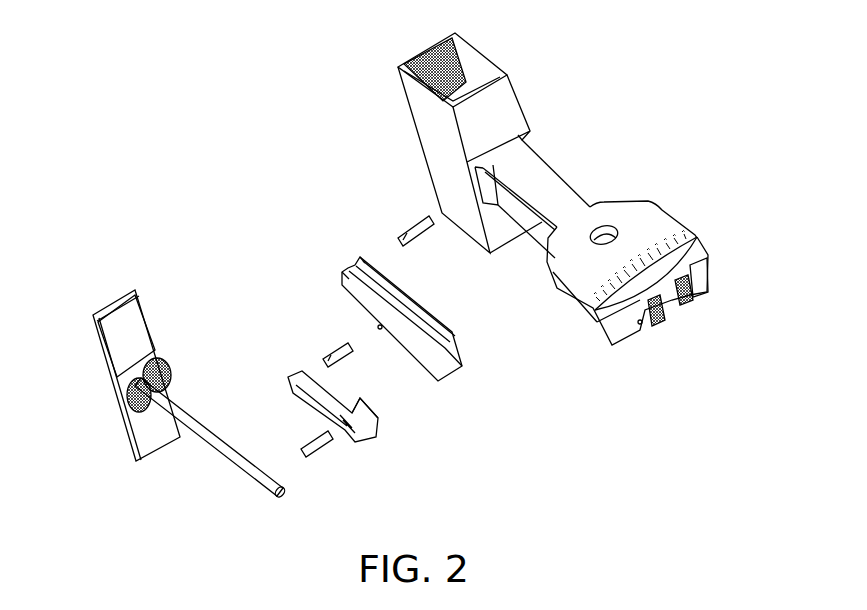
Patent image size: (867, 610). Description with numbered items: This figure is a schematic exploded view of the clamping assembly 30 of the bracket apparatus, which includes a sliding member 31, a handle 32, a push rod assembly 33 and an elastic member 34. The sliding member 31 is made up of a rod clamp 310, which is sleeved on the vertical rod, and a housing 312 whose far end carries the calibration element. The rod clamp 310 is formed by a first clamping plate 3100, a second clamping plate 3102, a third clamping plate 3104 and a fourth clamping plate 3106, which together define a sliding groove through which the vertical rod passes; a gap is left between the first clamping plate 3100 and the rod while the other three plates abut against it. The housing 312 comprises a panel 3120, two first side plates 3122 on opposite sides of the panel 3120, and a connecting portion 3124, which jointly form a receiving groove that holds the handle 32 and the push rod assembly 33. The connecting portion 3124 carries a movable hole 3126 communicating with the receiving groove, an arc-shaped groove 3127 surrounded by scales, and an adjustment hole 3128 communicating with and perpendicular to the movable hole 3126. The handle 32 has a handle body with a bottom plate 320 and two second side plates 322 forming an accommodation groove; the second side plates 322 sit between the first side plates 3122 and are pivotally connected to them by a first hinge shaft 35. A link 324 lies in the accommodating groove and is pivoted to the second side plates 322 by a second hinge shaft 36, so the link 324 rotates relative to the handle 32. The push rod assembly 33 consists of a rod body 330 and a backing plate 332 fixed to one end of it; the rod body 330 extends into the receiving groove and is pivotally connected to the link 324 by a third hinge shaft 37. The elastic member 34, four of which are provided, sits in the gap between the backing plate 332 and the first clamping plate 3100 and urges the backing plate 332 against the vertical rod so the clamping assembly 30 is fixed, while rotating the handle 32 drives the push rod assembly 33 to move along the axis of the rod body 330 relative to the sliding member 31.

The clamping assembly 30 is at (128, 54).
The sliding member 31 is at (542, 106).
The rod clamp 310 is at (330, 18).
The first clamping plate 3100 is at (475, 133).
The second clamping plate 3102 is at (417, 89).
The third clamping plate 3104 is at (465, 43).
The fourth clamping plate 3106 is at (428, 62).
The housing 312 is at (742, 118).
The panel 3120 is at (558, 200).
The first side plate 3122 is at (523, 208).
The connecting portion 3124 is at (655, 210).
The movable hole 3126 is at (662, 297).
The arc-shaped groove 3127 is at (690, 248).
The adjustment hole 3128 is at (653, 287).
The handle 32 is at (605, 476).
The bottom plate 320 is at (450, 368).
The second side plate 322 is at (455, 348).
The link 324 is at (367, 413).
The push rod assembly 33 is at (64, 432).
The rod body 330 is at (248, 470).
The backing plate 332 is at (143, 440).
The elastic member 34 is at (130, 387).
The first hinge shaft 35 is at (415, 232).
The second hinge shaft 36 is at (337, 350).
The third hinge shaft 37 is at (310, 445).